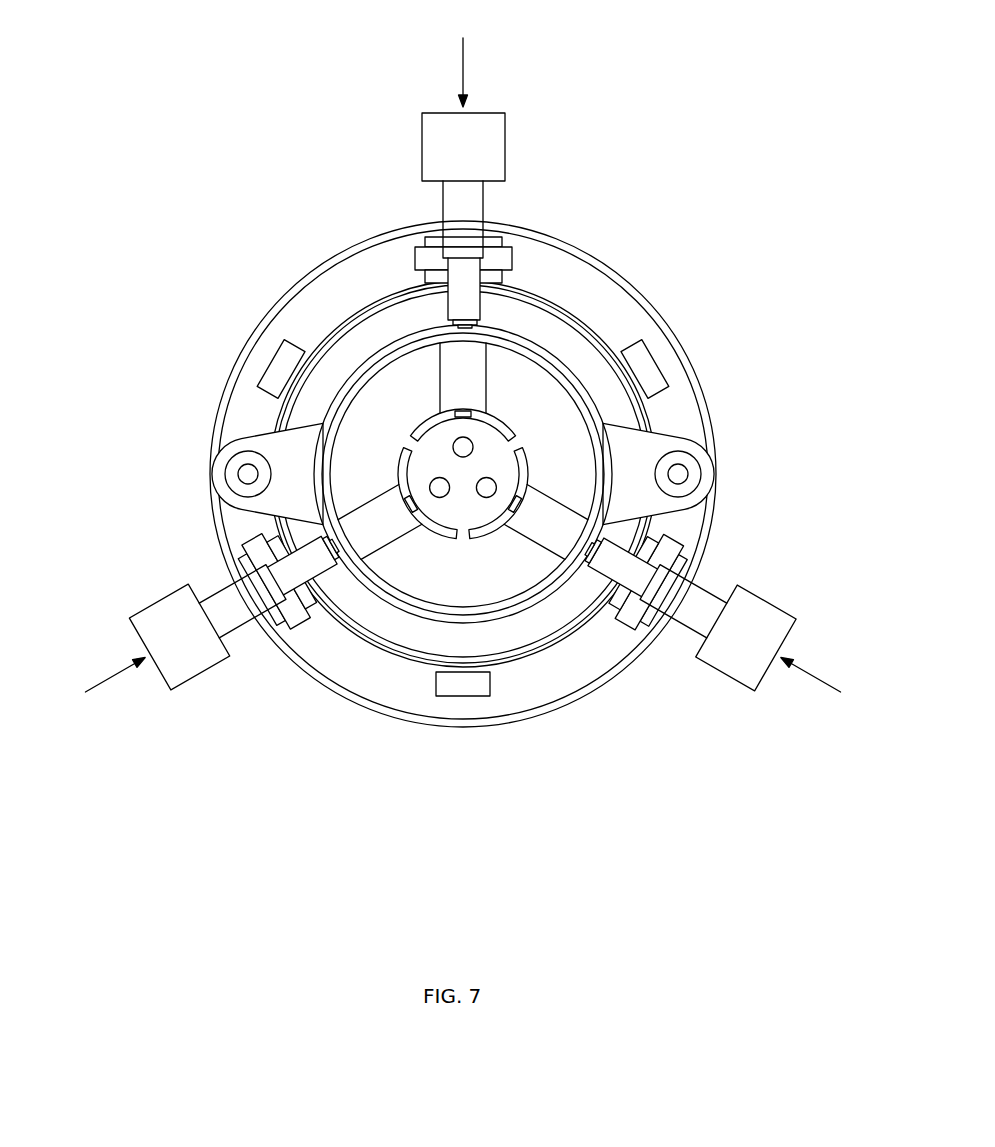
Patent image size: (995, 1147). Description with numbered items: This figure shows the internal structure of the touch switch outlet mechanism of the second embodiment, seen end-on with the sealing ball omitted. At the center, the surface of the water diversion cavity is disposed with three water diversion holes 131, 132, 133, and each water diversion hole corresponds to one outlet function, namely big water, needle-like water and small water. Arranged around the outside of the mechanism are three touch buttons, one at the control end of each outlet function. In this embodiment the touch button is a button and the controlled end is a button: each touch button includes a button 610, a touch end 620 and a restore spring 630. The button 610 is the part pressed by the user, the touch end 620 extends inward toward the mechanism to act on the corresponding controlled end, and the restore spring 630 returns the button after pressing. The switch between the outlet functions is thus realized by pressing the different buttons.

The water diversion hole 131 is at (468, 441).
The water diversion hole 132 is at (486, 481).
The water diversion hole 133 is at (440, 487).
The button 610 is at (493, 165).
The touch end 620 is at (465, 240).
The restore spring 630 is at (470, 322).